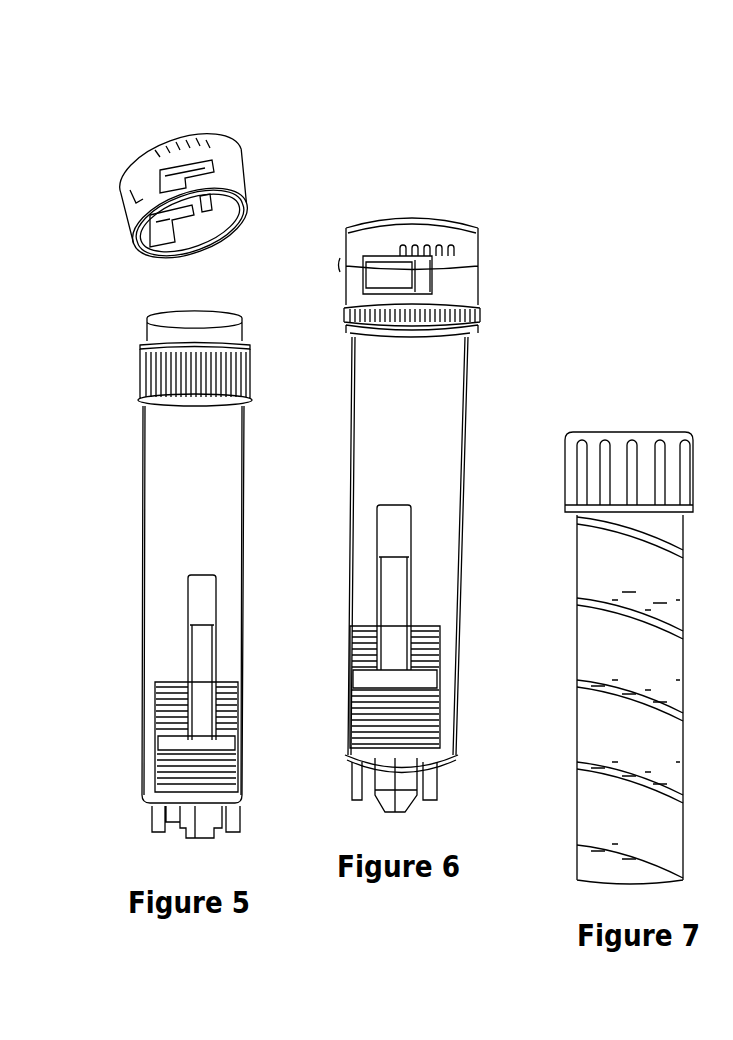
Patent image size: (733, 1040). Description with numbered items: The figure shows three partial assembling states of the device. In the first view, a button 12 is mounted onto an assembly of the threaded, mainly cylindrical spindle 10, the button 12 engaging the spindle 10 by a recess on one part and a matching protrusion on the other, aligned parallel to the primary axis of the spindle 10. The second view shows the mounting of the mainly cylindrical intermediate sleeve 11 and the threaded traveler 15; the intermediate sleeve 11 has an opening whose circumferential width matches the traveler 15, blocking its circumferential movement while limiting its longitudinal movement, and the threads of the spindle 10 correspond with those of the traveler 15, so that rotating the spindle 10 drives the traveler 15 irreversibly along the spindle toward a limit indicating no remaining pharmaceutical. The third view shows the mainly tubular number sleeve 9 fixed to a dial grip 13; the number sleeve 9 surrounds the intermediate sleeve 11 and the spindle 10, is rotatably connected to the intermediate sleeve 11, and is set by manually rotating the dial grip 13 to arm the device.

In FIG. 7, the number sleeve 9 is at (588, 565).
In FIG. 5, the spindle 10 is at (172, 706).
In FIG. 6, the spindle 10 is at (390, 533).
In FIG. 5, the intermediate sleeve 11 is at (183, 375).
In FIG. 5, the button 12 is at (183, 148).
In FIG. 6, the button 12 is at (430, 228).
In FIG. 7, the dial grip 13 is at (610, 462).
In FIG. 6, the traveler 15 is at (387, 670).